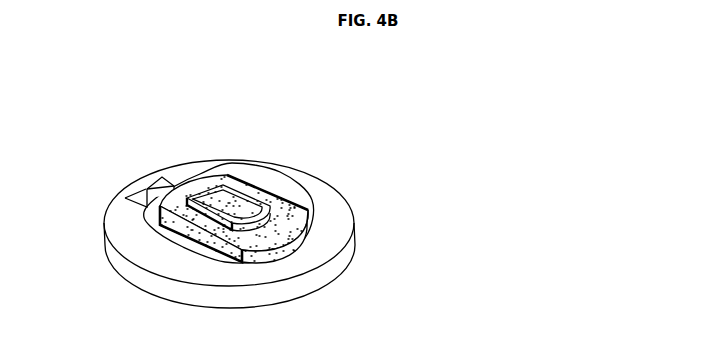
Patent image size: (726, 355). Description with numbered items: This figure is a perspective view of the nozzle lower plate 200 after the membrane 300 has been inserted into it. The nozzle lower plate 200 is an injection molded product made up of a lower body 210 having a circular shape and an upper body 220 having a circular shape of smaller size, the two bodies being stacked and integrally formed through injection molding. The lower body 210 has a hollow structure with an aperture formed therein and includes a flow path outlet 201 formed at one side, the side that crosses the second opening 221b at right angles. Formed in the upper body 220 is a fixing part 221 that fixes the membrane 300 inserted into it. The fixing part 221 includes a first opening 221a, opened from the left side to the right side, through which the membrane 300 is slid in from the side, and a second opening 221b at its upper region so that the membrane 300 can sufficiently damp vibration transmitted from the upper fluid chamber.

The nozzle lower plate 200 is at (235, 207).
The flow path outlet 201 is at (140, 194).
The lower body 210 is at (318, 203).
The upper body 220 is at (215, 168).
The fixing part 221 is at (210, 230).
The first opening 221a is at (270, 263).
The second opening 221b is at (198, 197).
The membrane 300 is at (258, 220).